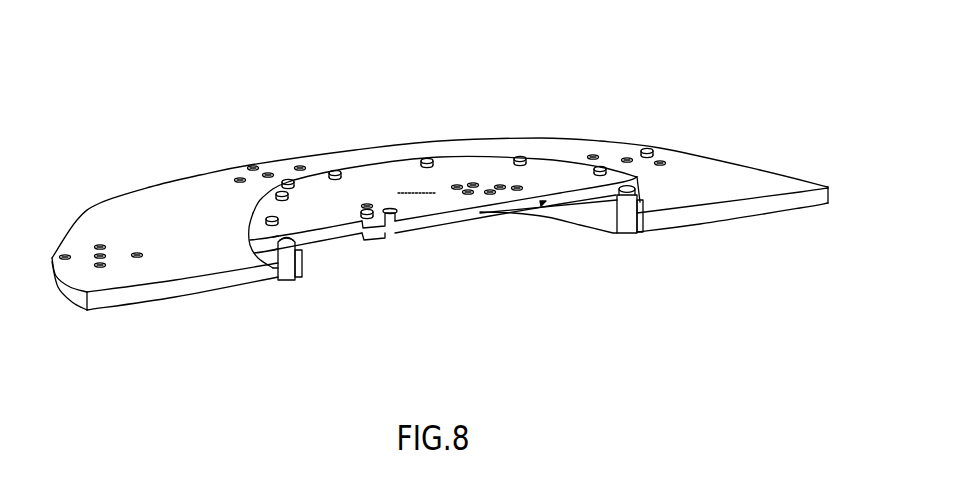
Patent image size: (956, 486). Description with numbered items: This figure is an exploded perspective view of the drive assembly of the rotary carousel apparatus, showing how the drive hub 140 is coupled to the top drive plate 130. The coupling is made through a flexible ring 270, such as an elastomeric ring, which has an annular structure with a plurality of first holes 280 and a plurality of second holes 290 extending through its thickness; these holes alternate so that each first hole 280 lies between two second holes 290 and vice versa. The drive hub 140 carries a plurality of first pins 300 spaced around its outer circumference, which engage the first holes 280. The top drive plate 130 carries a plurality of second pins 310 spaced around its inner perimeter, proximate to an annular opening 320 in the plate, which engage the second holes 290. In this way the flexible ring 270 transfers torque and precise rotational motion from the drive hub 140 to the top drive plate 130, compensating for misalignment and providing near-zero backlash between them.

The top drive plate 130 is at (743, 178).
The drive hub 140 is at (446, 203).
The flexible ring 270 is at (600, 216).
The first holes 280 is at (252, 212).
The second holes 290 is at (279, 281).
The first pins 300 is at (522, 158).
The second pins 310 is at (628, 212).
The annular opening 320 is at (303, 271).